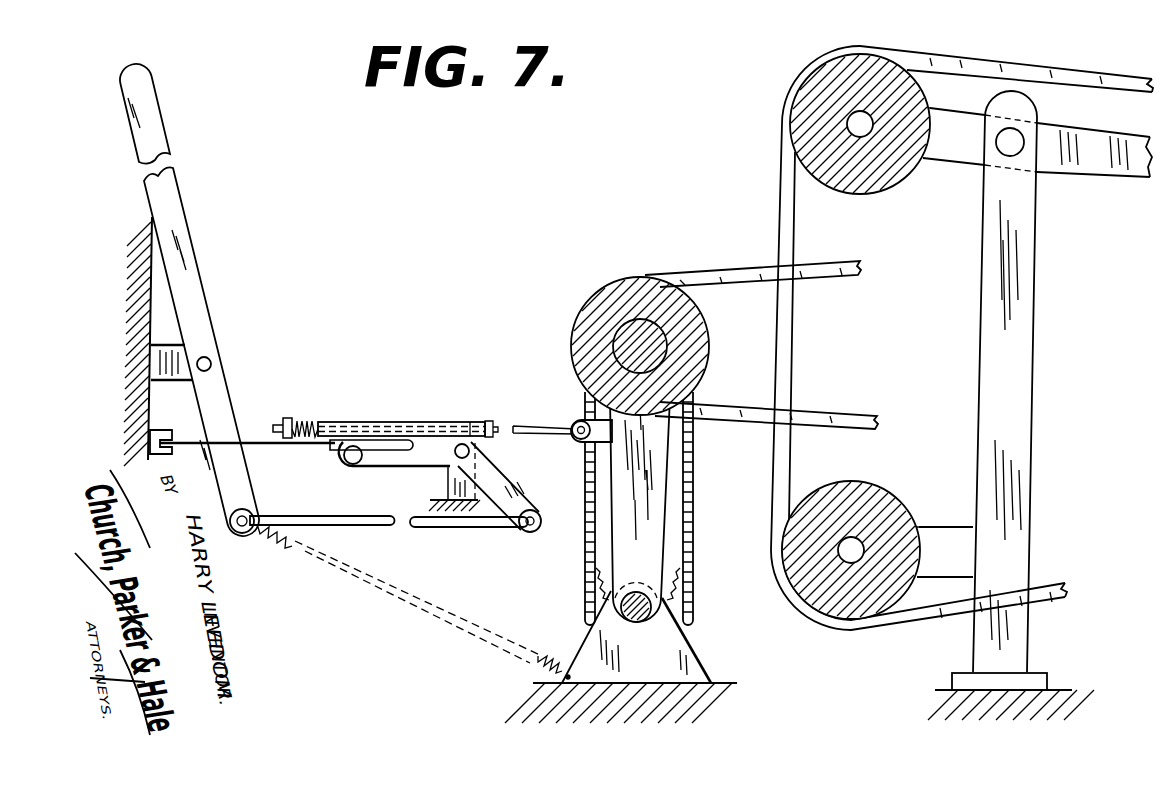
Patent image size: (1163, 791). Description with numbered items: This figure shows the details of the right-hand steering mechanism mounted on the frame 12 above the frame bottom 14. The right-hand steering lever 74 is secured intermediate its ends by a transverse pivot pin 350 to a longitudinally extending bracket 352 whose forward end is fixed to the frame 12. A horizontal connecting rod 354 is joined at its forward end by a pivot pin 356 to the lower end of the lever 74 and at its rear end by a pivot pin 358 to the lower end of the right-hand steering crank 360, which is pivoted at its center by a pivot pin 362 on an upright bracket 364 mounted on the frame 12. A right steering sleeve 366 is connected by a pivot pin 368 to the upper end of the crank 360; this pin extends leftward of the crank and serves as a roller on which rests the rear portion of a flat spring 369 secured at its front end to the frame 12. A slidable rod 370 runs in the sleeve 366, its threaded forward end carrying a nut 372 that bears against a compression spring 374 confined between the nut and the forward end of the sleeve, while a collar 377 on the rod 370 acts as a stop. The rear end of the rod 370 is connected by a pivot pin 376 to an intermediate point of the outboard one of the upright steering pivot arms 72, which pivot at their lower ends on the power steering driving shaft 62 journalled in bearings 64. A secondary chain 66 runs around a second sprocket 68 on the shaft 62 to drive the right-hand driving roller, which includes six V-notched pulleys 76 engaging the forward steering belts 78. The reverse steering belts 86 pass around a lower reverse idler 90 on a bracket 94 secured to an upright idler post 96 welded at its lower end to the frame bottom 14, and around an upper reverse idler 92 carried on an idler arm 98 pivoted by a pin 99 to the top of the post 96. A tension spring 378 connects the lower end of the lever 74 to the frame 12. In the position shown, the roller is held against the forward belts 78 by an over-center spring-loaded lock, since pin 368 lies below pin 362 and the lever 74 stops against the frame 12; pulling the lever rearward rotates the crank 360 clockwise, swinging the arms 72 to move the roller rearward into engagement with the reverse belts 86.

The frame 12 is at (155, 397).
The base plate 14 is at (1060, 690).
The power steering driving shaft 62 is at (651, 605).
The bearings 64 is at (692, 660).
The secondary power transmission chain 66 is at (585, 481).
The second sprocket 68 is at (595, 600).
The right-hand upright steering pivot arms 72 is at (653, 503).
The right-hand steering lever 74 is at (181, 190).
The V-notched pulleys 76 is at (607, 308).
The right-hand forward steering belts 78 is at (815, 280).
The right-hand reverse double-V steering belts 86 is at (795, 324).
The lower right-hand reverse idler 90 is at (888, 492).
The upper right-hand reverse idler 92 is at (927, 92).
The bracket 94 is at (952, 540).
The idler post 96 is at (1023, 405).
The idler arm 98 is at (1107, 177).
The pivot pin 99 is at (1001, 150).
The pivot pin 350 is at (211, 364).
The bracket 352 is at (182, 357).
The connecting rod 354 is at (308, 512).
The pivot pin 356 is at (247, 533).
The pivot pin 358 is at (527, 531).
The right-hand steering crank 360 is at (495, 478).
The pivot pin 362 is at (461, 443).
The upright bracket 364 is at (448, 477).
The right steering sleeve 366 is at (347, 422).
The pivot pin 368 is at (353, 464).
The flat spring 369 is at (304, 450).
The slidable rod 370 is at (529, 426).
The nut 372 is at (283, 418).
The compression spring 374 is at (308, 421).
The pivot pin 376 is at (578, 421).
The collar 377 is at (488, 421).
The tension spring 378 is at (290, 540).